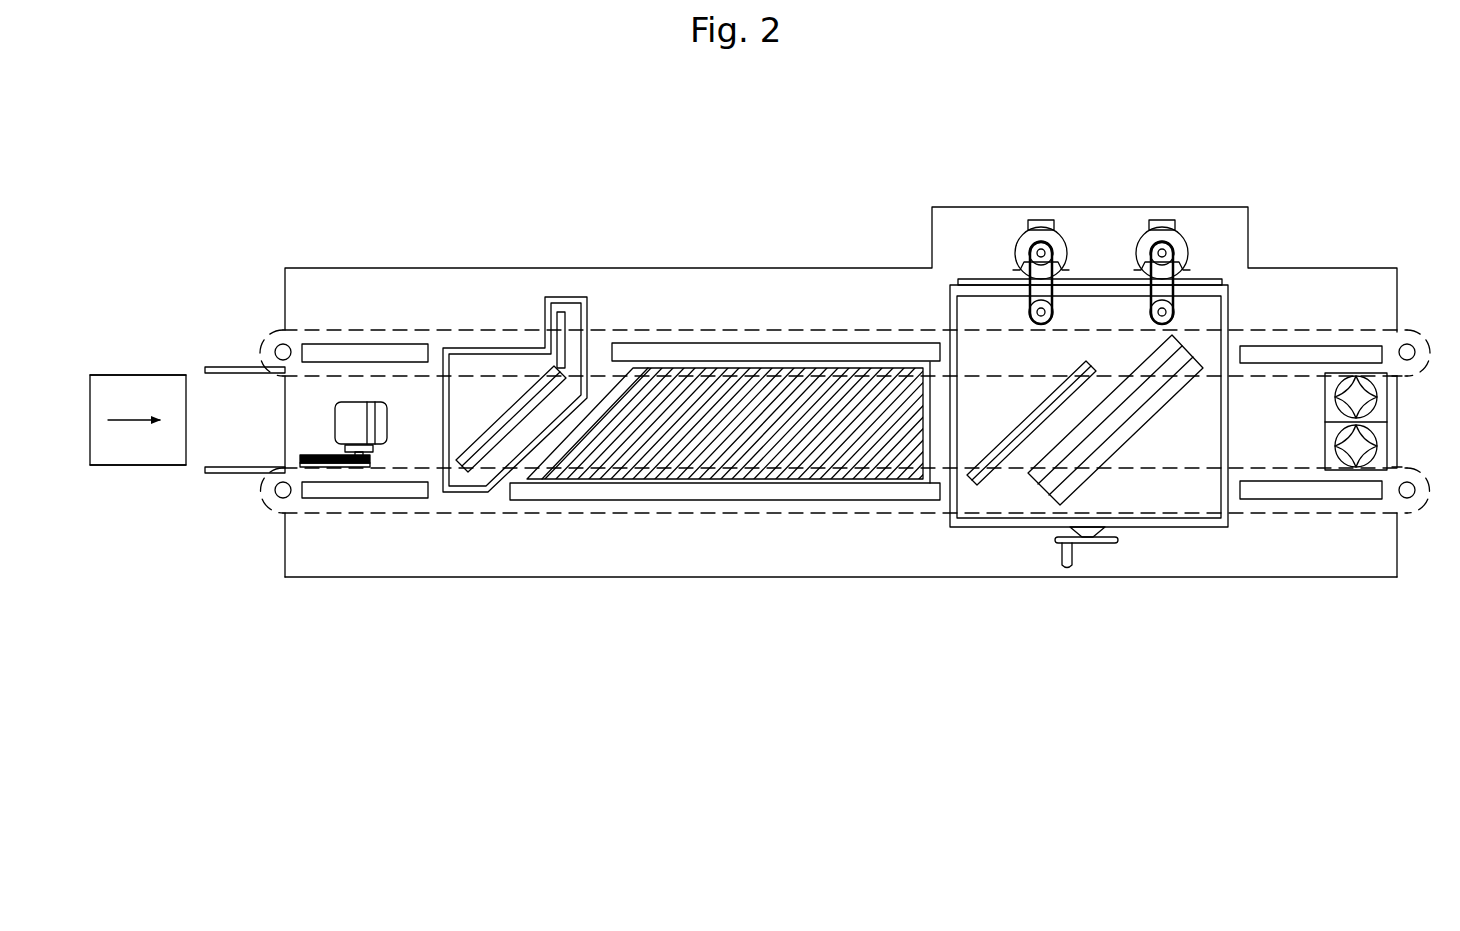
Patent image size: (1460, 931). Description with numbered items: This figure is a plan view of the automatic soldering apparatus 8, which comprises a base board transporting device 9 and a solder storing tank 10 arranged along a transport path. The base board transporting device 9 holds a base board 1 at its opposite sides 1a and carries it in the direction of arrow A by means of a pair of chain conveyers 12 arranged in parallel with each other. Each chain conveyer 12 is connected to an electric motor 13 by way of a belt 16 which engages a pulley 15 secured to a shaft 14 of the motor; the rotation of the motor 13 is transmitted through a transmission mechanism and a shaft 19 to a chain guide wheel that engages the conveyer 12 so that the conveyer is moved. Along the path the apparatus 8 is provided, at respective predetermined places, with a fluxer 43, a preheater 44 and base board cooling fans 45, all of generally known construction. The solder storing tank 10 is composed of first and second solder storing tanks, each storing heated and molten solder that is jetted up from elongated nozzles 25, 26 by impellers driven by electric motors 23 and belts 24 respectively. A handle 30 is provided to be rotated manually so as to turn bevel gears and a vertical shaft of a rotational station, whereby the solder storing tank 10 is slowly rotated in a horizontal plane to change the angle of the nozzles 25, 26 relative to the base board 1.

The base board 1 is at (166, 468).
The opposite sides of the base board 1a is at (118, 375).
The automatic soldering apparatus 8 is at (635, 268).
The base board transporting device 9 is at (323, 405).
The solder storing tank 10 is at (1003, 530).
The chain conveyer 12 is at (413, 328).
The electric motor 13 is at (335, 425).
The shaft of the motor 14 is at (372, 457).
The pulley 15 is at (360, 468).
The belt 16 is at (333, 468).
The shaft 19 is at (278, 345).
The electric motor 23 is at (1158, 275).
The belt 24 is at (1020, 262).
The elongated nozzle 25 is at (1010, 432).
The elongated nozzle 26 is at (1150, 422).
The handle 30 is at (1093, 548).
The fluxer 43 is at (490, 450).
The preheater 44 is at (720, 480).
The base board cooling fans 45 is at (1388, 408).